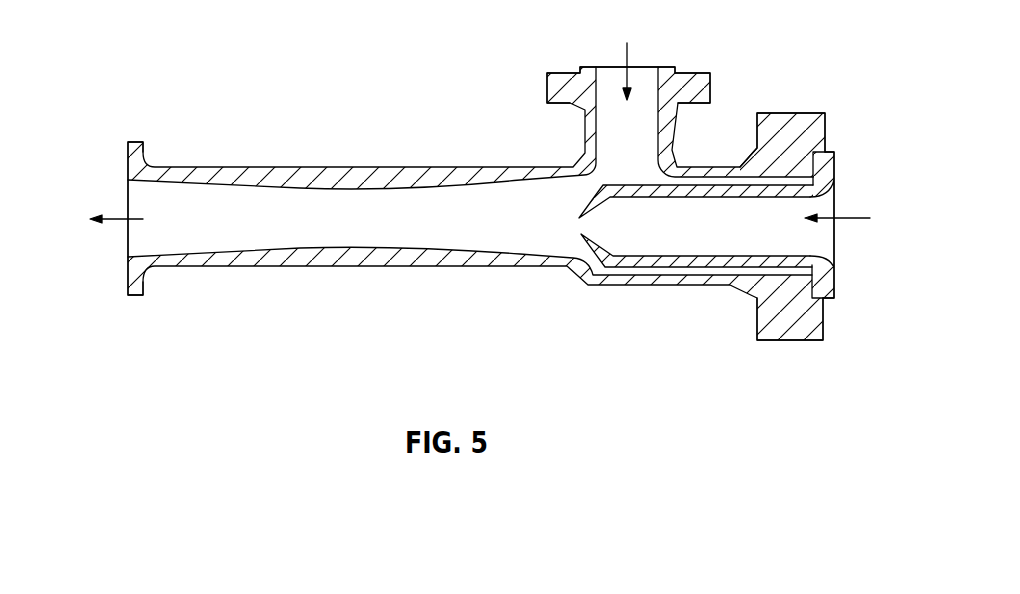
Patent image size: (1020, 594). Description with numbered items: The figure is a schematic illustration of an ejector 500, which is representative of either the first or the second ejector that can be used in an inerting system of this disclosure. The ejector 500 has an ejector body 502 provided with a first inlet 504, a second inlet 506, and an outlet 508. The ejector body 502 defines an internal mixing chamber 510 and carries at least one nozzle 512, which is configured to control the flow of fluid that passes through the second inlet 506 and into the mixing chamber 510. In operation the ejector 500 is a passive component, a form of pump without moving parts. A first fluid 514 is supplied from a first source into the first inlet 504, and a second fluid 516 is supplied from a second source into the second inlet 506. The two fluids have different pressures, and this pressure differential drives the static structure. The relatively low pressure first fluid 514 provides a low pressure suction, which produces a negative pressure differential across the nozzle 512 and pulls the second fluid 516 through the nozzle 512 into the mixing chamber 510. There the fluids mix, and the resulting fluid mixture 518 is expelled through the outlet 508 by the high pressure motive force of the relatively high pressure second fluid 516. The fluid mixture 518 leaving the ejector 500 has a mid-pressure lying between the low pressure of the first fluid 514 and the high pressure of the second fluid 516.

The ejector 500 is at (266, 35).
The ejector body 502 is at (387, 263).
The first inlet 504 is at (556, 75).
The second inlet 506 is at (835, 152).
The outlet 508 is at (137, 155).
The mixing chamber 510 is at (537, 233).
The nozzle 512 is at (665, 263).
The first fluid 514 is at (652, 32).
The second fluid 516 is at (909, 233).
The fluid mixture 518 is at (85, 233).